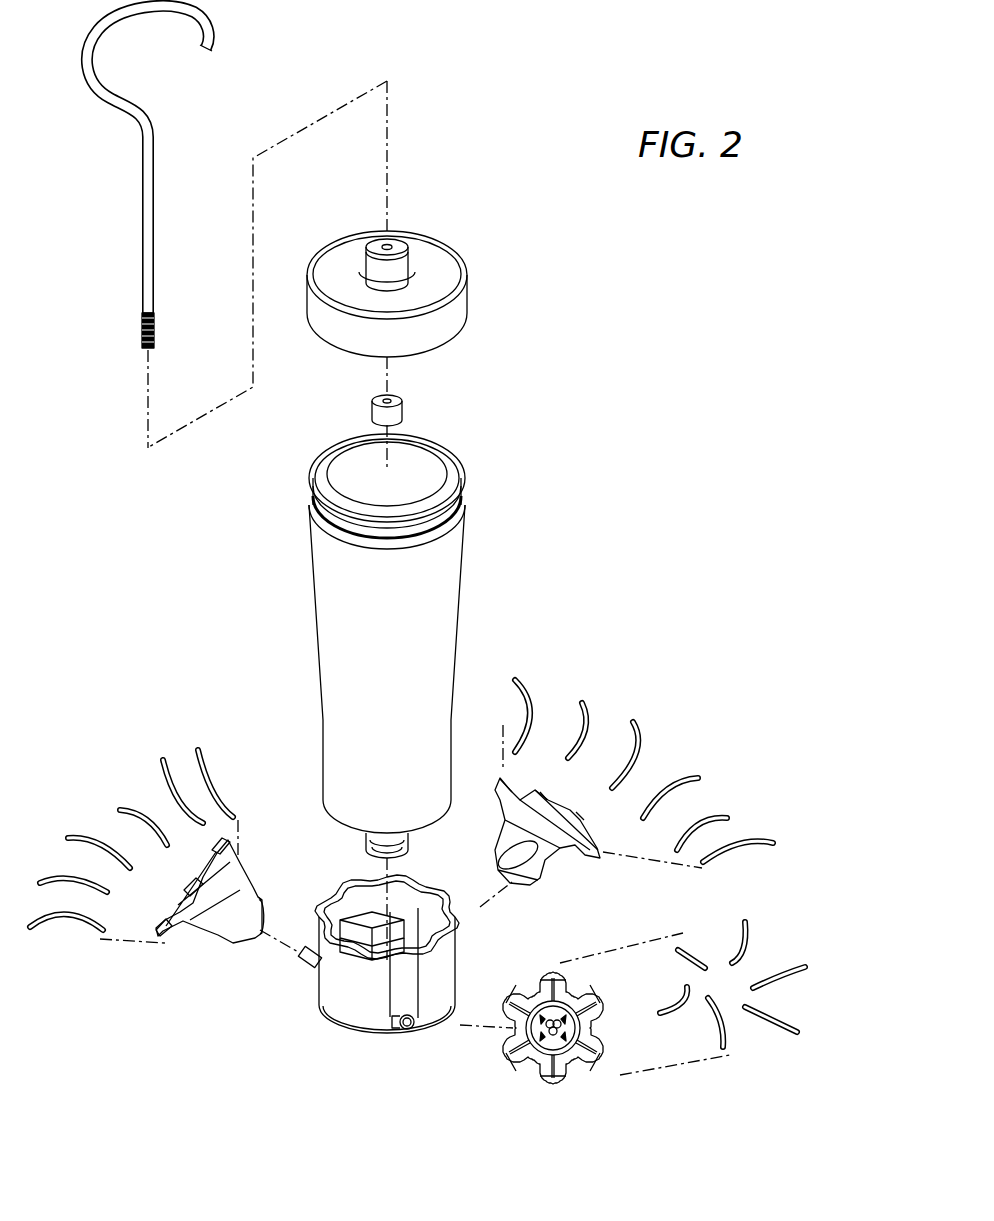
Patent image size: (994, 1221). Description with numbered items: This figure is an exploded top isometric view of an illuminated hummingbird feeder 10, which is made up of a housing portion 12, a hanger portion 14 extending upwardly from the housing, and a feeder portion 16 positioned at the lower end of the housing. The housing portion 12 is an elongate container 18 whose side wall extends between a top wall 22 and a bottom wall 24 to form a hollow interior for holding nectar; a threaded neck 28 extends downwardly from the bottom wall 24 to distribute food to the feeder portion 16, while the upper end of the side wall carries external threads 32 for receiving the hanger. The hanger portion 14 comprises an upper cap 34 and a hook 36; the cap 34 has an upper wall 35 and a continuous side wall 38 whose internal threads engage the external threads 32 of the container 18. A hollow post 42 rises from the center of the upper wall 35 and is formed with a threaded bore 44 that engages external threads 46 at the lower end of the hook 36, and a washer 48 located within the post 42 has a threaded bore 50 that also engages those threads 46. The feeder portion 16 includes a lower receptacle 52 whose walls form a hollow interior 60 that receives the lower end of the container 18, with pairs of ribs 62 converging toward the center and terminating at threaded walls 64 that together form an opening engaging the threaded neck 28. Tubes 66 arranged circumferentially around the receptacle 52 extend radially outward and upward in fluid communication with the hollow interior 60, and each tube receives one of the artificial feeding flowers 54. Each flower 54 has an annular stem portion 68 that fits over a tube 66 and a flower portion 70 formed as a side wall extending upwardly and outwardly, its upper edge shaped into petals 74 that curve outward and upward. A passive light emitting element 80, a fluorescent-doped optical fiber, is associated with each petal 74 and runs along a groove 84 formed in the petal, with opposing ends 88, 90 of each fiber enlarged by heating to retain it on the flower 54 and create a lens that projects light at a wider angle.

The illuminated hummingbird feeder 10 is at (592, 330).
The housing portion 12 is at (400, 647).
The hanger portion 14 is at (406, 253).
The feeder portion 16 is at (348, 958).
The elongate container 18 is at (322, 612).
The top wall 22 is at (452, 468).
The bottom wall 24 is at (347, 836).
The threaded neck 28 is at (408, 846).
The external threads 32 is at (320, 500).
The upper cap 34 is at (468, 306).
The upper wall 35 is at (455, 270).
The hook 36 is at (142, 227).
The side wall 38 is at (320, 322).
The hollow post 42 is at (372, 244).
The threaded bore 44 is at (398, 240).
The external threads 46 is at (142, 328).
The washer 48 is at (398, 400).
The threaded bore 50 is at (373, 401).
The lower receptacle 52 is at (374, 956).
The artificial feeding flower 54 is at (414, 914).
The hollow interior 60 is at (424, 920).
The ribs 62 is at (372, 910).
The threaded wall 64 is at (385, 945).
The tube 66 is at (324, 1023).
The stem portion 68 is at (262, 916).
The flower portion 70 is at (248, 882).
The petals 74 is at (182, 946).
The light emitting element 80 is at (417, 862).
The groove 84 is at (550, 980).
The end of optical fiber 88 is at (205, 752).
The end of optical fiber 90 is at (238, 812).